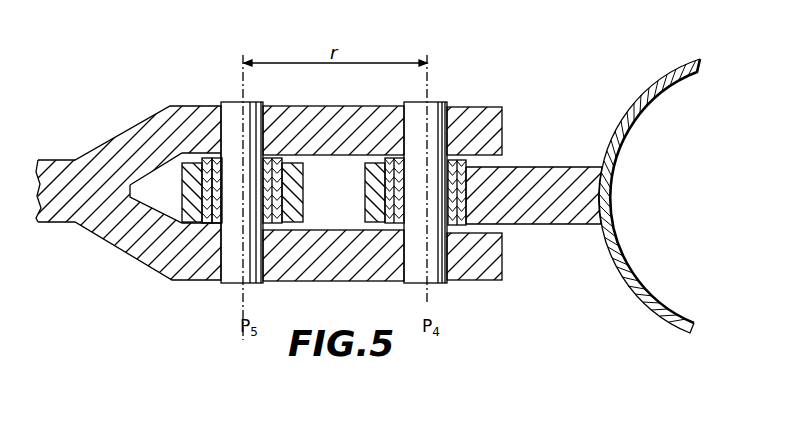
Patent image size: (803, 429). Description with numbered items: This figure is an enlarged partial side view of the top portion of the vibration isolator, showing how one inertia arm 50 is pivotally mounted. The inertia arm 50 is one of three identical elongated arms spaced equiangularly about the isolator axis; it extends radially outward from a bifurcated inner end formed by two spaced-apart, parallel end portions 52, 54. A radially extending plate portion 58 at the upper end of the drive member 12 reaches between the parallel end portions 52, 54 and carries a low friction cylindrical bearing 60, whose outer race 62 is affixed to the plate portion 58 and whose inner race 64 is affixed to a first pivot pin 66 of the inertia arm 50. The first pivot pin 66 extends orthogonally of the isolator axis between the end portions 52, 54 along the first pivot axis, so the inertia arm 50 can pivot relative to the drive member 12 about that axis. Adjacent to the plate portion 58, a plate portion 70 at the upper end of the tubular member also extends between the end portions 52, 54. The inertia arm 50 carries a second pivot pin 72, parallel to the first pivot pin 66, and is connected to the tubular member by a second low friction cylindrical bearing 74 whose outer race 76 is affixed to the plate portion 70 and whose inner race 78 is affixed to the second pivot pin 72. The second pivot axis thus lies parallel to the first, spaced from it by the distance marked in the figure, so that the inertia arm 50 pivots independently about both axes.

The drive member 12 is at (680, 70).
The inertia arm 50 is at (61, 162).
The end portion 52 is at (485, 122).
The end portion 54 is at (498, 262).
The plate portion 58 is at (583, 172).
The cylindrical bearing 60 is at (394, 156).
The outer race 62 is at (468, 183).
The inner race 64 is at (384, 203).
The first pivot pin 66 is at (441, 104).
The plate portion 70 is at (182, 196).
The second pivot pin 72 is at (236, 270).
The cylindrical bearing 74 is at (211, 158).
The outer race 76 is at (283, 182).
The inner race 78 is at (218, 160).